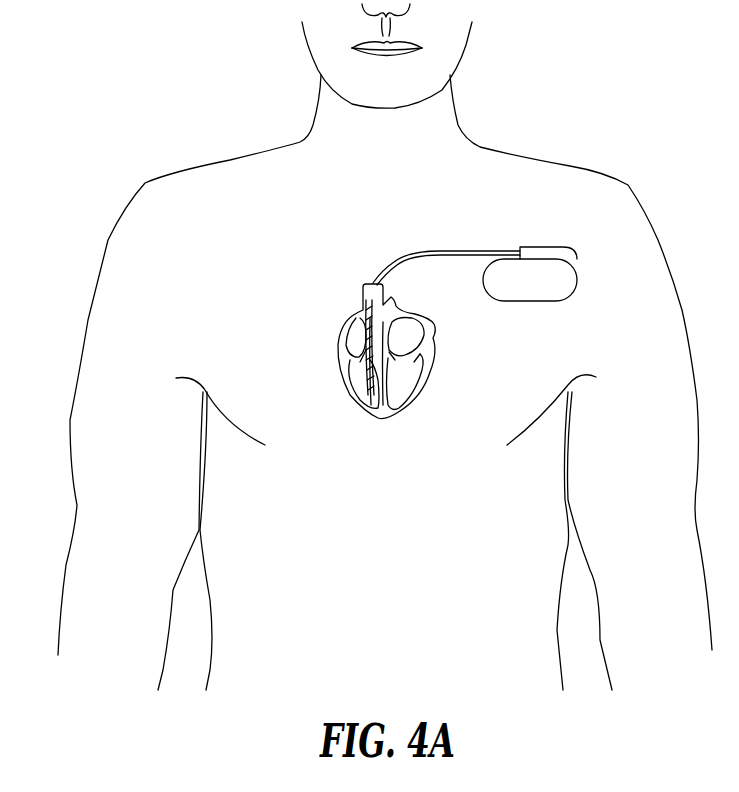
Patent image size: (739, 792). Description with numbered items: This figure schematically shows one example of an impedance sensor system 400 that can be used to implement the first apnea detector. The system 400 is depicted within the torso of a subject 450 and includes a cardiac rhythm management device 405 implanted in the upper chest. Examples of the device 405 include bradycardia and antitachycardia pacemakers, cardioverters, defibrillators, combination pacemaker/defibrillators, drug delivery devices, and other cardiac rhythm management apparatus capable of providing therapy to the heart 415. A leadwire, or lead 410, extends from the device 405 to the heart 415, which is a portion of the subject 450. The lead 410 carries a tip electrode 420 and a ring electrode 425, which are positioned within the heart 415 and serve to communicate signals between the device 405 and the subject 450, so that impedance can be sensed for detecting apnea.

The impedance sensor system 400 is at (133, 49).
The subject 450 is at (525, 149).
The cardiac rhythm management device 405 is at (582, 279).
The lead 410 is at (438, 250).
The heart 415 is at (420, 392).
The tip electrode 420 is at (364, 406).
The ring electrode 425 is at (362, 380).